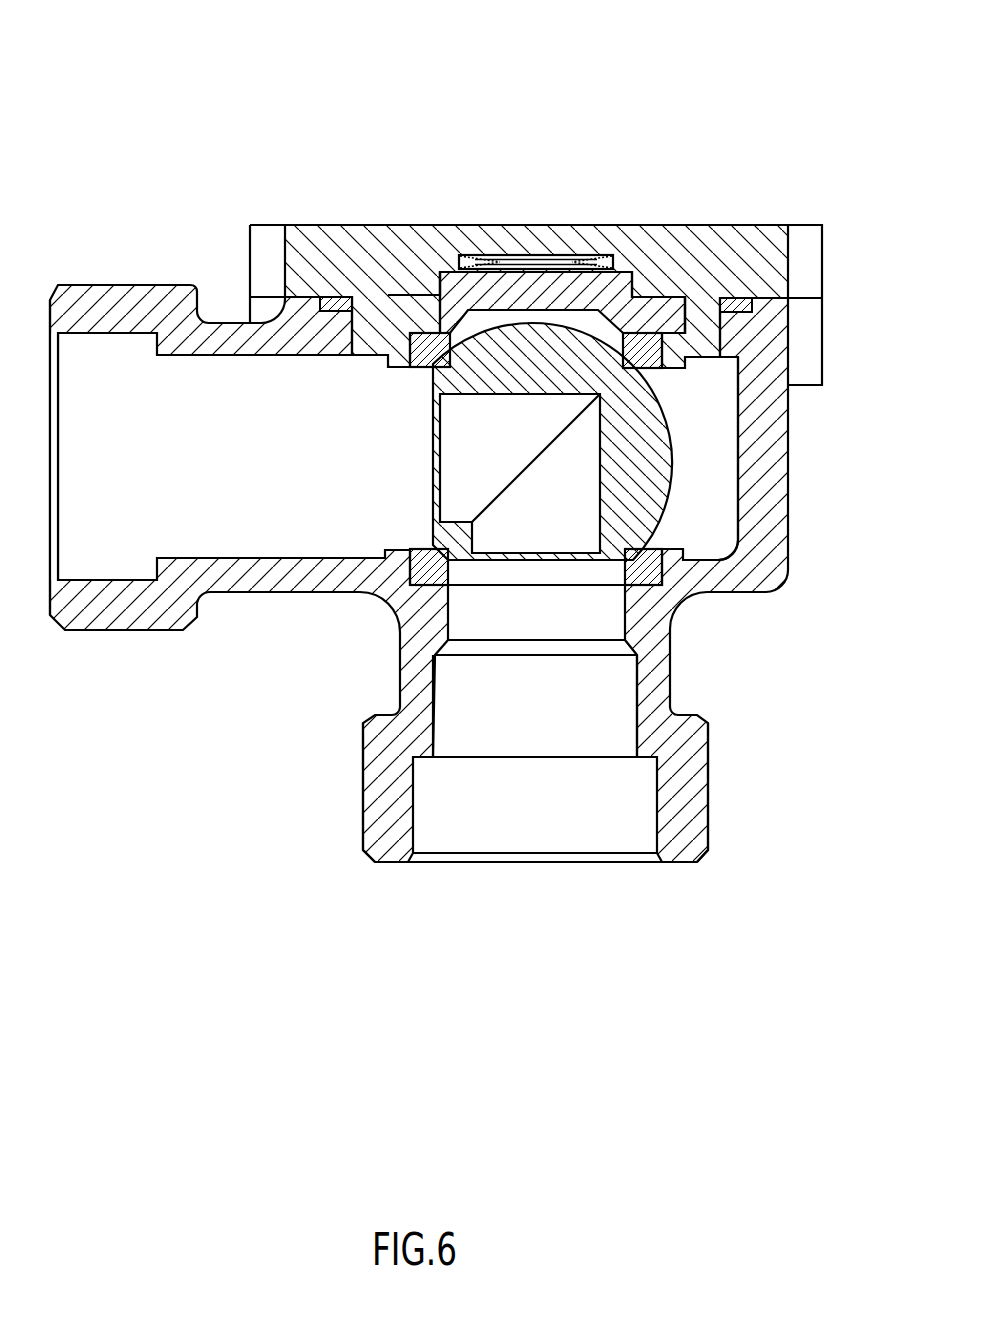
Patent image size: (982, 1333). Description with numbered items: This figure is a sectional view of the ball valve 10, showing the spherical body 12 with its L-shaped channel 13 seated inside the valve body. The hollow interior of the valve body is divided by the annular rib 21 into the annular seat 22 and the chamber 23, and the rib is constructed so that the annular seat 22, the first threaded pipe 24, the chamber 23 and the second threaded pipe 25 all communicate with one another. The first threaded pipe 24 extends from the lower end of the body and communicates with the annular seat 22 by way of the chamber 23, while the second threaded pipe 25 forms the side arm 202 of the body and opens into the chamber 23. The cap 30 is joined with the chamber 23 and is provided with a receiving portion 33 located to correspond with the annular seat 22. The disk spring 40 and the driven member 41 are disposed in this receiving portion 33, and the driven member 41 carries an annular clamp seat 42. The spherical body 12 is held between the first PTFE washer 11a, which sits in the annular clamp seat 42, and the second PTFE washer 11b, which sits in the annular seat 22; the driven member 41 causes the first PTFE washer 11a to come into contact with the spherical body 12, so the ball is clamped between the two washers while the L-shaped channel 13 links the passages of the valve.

The ball valve 10 is at (526, 103).
The cap 30 is at (360, 237).
The receiving portion 33 is at (448, 267).
The disk spring 40 is at (475, 260).
The driven member 41 is at (593, 288).
The annular clamp seat 42 is at (663, 332).
The first PTFE washer 11a is at (685, 358).
The second PTFE washer 11b is at (647, 568).
The spherical body 12 is at (638, 451).
The L-shaped channel 13 is at (453, 493).
The annular rib 21 is at (400, 562).
The annular seat 22 is at (548, 615).
The chamber 23 is at (718, 465).
The first threaded pipe 24 is at (413, 805).
The second threaded pipe 25 is at (107, 582).
The side pipe arm 202 is at (285, 582).